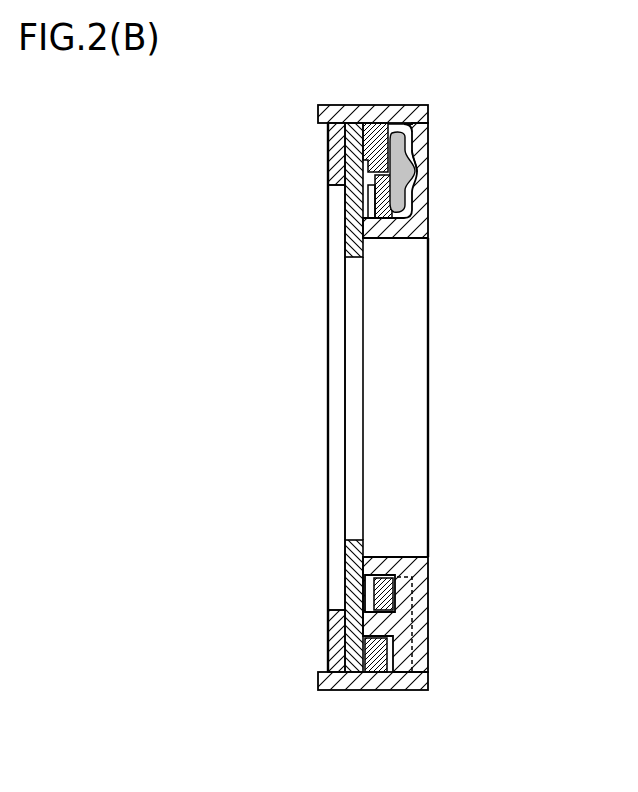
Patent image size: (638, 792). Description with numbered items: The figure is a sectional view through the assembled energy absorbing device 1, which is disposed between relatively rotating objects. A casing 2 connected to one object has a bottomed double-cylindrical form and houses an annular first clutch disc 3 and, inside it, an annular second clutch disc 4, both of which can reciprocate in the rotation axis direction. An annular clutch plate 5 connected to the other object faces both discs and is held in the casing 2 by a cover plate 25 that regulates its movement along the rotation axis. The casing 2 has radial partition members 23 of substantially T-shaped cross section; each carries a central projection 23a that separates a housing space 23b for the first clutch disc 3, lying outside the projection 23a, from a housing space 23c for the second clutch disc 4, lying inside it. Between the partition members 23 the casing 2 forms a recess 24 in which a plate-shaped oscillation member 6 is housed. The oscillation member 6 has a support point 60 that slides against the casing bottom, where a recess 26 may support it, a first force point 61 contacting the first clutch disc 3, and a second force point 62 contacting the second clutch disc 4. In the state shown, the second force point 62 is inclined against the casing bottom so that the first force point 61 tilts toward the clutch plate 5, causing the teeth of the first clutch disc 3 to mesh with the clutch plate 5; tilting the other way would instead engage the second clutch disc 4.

The energy absorbing device 1 is at (268, 276).
The casing 2 is at (430, 372).
The first clutch disc 3 is at (368, 126).
The second clutch disc 4 is at (382, 222).
The clutch plate 5 is at (345, 237).
The oscillation member 6 is at (401, 129).
The partition member 23 is at (400, 623).
The projection 23a is at (377, 632).
The housing space 23b is at (393, 652).
The housing space 23c is at (393, 589).
The recess 24 is at (415, 137).
The cover plate 25 is at (328, 372).
The recess 26 is at (413, 172).
The support point 60 is at (410, 183).
The first force point 61 is at (363, 138).
The second force point 62 is at (363, 205).